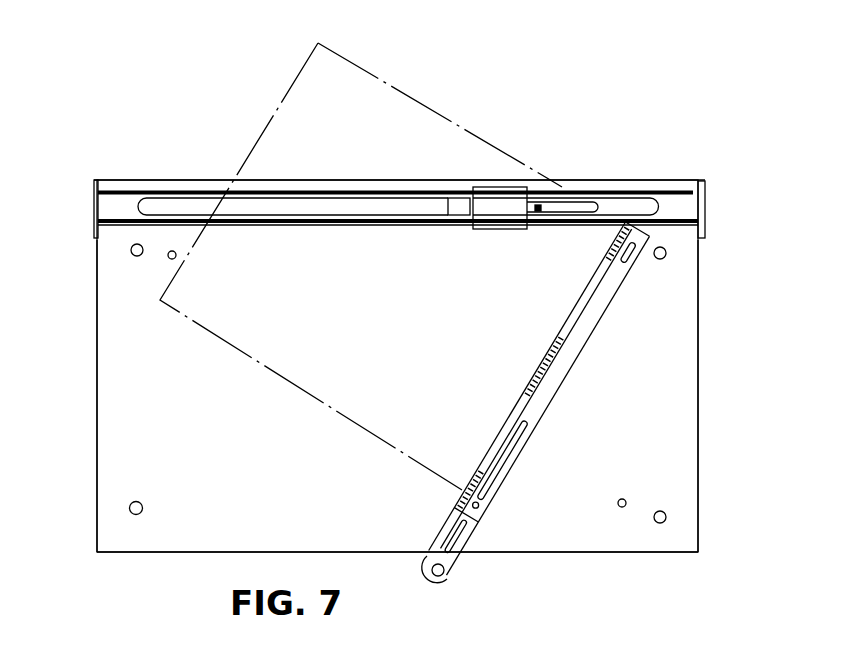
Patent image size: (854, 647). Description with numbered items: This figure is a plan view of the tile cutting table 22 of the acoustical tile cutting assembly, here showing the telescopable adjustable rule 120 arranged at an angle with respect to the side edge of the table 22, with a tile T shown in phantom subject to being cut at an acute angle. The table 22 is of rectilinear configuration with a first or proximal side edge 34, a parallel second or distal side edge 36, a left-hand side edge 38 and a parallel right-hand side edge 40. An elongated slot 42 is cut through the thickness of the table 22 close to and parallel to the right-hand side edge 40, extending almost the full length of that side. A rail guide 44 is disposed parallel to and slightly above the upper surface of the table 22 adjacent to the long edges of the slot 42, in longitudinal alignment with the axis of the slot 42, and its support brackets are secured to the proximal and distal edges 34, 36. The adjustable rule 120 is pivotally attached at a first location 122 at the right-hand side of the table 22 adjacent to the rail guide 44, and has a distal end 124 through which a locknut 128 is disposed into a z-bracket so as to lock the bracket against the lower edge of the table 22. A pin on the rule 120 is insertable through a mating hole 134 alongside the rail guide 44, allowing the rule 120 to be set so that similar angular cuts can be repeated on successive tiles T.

The tile cutting table 22 is at (680, 462).
The first or proximal side edge 34 is at (703, 353).
The second or distal side edge 36 is at (95, 444).
The left-hand side edge 38 is at (627, 555).
The right-hand side edge 40 is at (653, 180).
The elongated slot 42 is at (183, 205).
The rail guide 44 is at (116, 213).
The telescopable adjustable rule 120 is at (573, 363).
The first location 122 is at (630, 260).
The distal end 124 is at (449, 576).
The locknut 128 is at (433, 556).
The mating hole 134 is at (170, 259).
The tile T is at (516, 138).